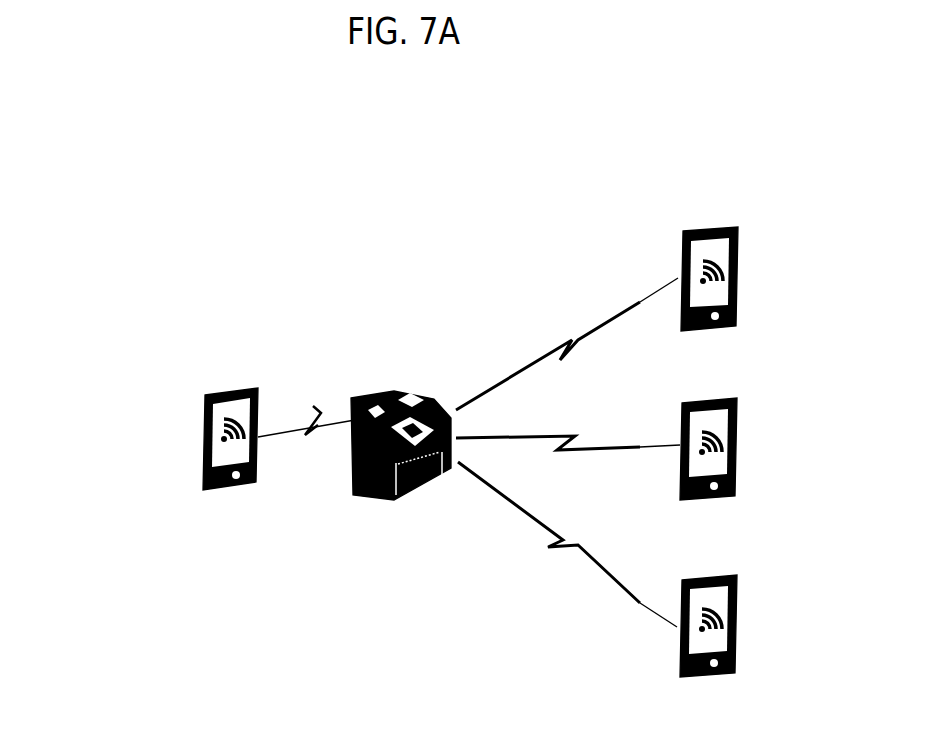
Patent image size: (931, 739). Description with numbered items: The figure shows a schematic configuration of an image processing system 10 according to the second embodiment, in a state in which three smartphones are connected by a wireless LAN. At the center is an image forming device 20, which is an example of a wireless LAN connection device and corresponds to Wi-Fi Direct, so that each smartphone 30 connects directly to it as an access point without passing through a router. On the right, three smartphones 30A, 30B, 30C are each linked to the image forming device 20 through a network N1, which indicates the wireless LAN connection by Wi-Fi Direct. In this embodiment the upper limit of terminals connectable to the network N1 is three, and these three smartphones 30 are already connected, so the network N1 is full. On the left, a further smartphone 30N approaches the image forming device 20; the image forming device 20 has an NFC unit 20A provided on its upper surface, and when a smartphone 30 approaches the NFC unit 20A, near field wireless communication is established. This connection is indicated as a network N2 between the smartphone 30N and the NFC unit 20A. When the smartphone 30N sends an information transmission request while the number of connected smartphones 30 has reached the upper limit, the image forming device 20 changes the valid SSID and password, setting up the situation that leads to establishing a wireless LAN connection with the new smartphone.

The image processing system 10 is at (311, 231).
The image forming device 20 is at (407, 391).
The NFC unit 20A is at (377, 413).
The smartphone 30 is at (506, 420).
The smartphone 30A is at (722, 228).
The smartphone 30B is at (722, 399).
The smartphone 30C is at (722, 577).
The smartphone 30N is at (225, 390).
The network N1 is at (570, 332).
The network N2 is at (313, 406).